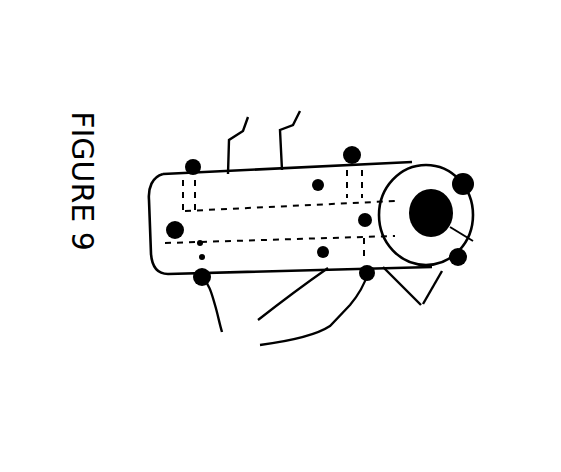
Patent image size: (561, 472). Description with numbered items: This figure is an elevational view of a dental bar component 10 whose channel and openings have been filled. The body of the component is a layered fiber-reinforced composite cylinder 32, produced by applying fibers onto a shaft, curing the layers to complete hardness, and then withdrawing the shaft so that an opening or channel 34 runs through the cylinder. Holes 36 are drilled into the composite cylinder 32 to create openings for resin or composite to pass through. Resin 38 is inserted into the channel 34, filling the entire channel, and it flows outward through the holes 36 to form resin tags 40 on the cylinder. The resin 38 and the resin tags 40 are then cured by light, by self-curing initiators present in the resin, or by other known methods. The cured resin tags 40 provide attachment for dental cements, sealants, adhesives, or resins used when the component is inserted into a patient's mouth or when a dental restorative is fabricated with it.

The device assembly 10 is at (311, 188).
The layered fiber-reinforced composite cylinder 32 is at (412, 310).
The channel 34 is at (239, 116).
The holes 36 is at (298, 118).
The resin 38 is at (470, 240).
The resin tags 40 is at (222, 325).